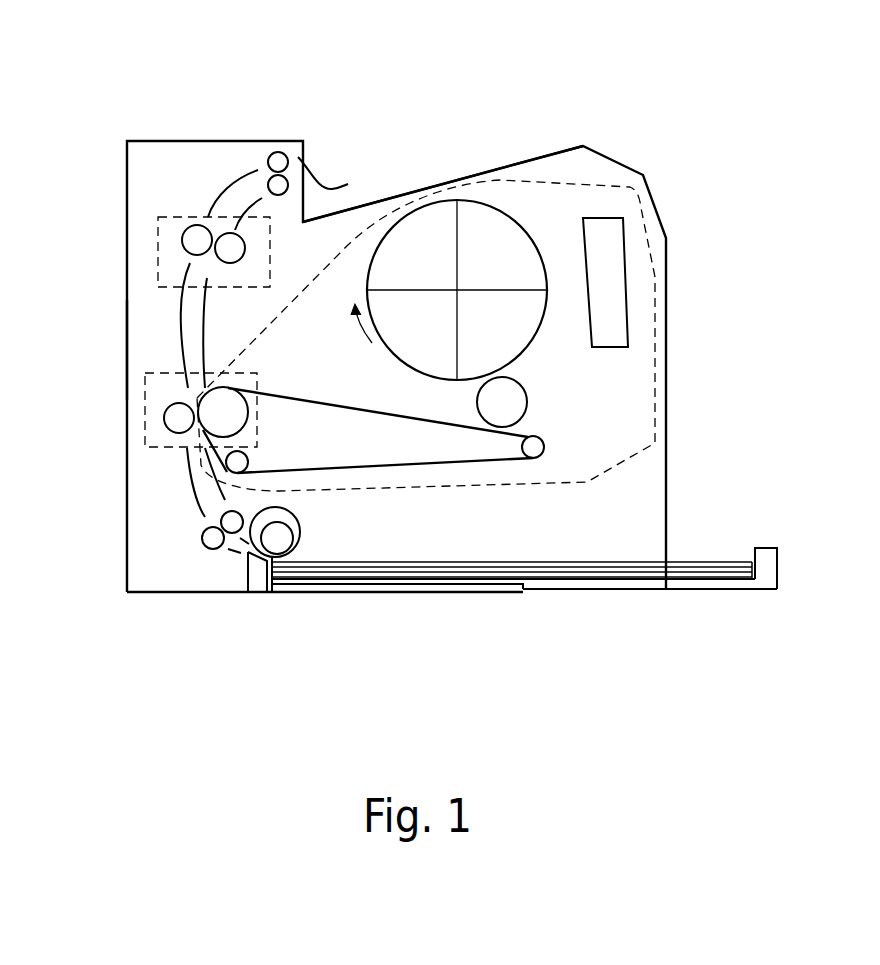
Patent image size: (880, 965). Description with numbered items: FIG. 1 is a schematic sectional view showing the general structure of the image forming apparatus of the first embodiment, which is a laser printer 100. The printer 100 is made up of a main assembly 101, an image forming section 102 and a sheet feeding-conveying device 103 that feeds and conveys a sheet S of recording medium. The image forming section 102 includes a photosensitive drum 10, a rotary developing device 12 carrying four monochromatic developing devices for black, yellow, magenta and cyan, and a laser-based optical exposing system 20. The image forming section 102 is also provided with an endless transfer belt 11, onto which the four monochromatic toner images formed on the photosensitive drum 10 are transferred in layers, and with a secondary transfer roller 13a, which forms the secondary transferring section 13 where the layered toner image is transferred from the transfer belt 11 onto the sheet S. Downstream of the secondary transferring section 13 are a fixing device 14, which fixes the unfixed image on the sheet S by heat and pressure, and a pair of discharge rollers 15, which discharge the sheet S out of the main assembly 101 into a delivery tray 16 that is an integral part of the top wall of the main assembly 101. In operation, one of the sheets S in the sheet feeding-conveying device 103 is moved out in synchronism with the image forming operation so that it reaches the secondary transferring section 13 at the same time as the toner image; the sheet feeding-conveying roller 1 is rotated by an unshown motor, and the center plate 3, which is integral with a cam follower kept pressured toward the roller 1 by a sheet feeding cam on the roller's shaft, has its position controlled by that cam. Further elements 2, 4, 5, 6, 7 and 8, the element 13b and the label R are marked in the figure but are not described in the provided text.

The laser printer 100 is at (662, 113).
The main assembly 101 is at (128, 300).
The image forming section 102 is at (645, 222).
The sheet feeding-conveying device 103 is at (331, 581).
The sheet feeding-conveying roller 1 is at (297, 542).
The feed roller shaft 2 is at (277, 542).
The center plate 3 is at (406, 590).
The tray wall 4 is at (258, 580).
The extension tray 5 is at (601, 589).
The feeding direction 6 is at (233, 568).
The conveyance roller 7 is at (202, 538).
The conveyance roller 8 is at (222, 518).
The photosensitive drum 10 is at (527, 400).
The transfer belt 11 is at (532, 437).
The rotary developing device 12 is at (500, 210).
The secondary transferring section 13 is at (202, 402).
The secondary transfer roller 13a is at (167, 415).
The heating roller 13b is at (233, 403).
The fixing device 14 is at (158, 243).
The pair of discharge rollers 15 is at (278, 152).
The delivery tray 16 is at (417, 190).
The laser-based optical exposing system 20 is at (617, 318).
The conveyance path R is at (213, 493).
The sheet of recording medium S is at (697, 563).